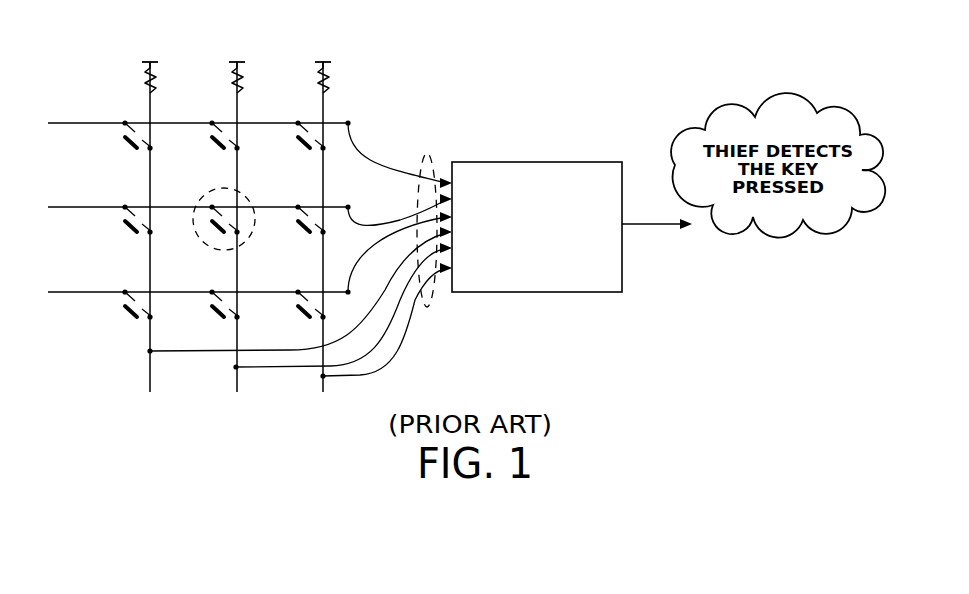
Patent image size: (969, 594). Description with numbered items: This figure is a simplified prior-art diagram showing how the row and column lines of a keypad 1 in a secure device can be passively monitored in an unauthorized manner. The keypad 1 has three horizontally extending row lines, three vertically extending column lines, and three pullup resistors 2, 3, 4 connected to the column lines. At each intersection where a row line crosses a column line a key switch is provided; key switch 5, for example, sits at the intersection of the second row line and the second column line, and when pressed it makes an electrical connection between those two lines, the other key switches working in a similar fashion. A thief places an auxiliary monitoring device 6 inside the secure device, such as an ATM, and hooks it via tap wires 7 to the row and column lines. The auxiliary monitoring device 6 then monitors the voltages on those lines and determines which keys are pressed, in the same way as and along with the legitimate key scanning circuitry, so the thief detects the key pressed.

The keypad 1 is at (80, 53).
The pullup resistor 2 is at (157, 82).
The pullup resistor 3 is at (244, 82).
The pullup resistor 4 is at (330, 82).
The key switch 5 is at (248, 205).
The auxiliary monitoring device 6 is at (543, 162).
The tap wires 7 is at (425, 153).